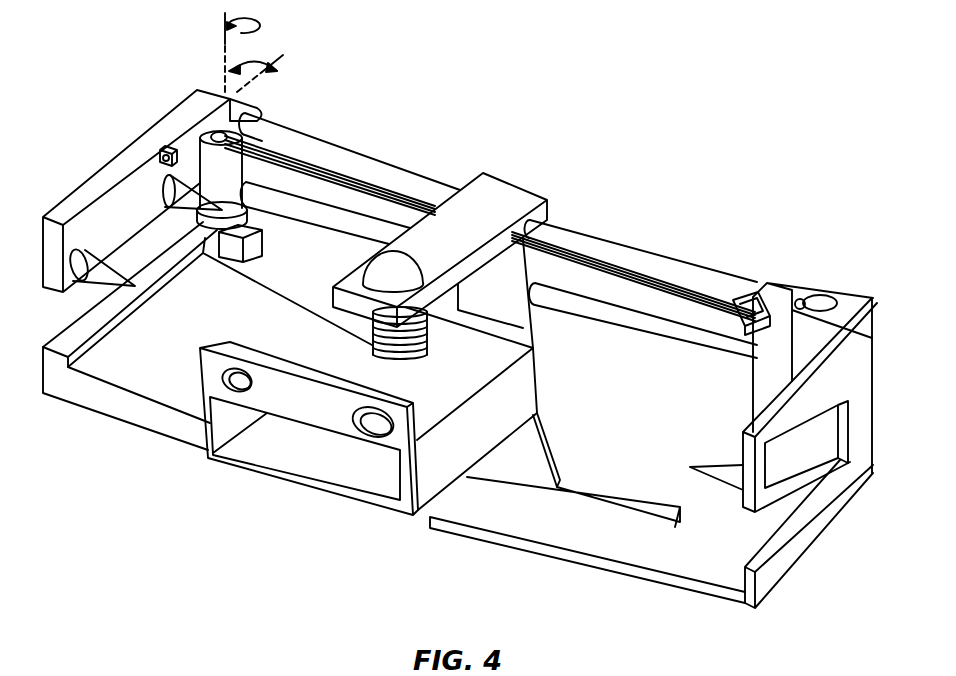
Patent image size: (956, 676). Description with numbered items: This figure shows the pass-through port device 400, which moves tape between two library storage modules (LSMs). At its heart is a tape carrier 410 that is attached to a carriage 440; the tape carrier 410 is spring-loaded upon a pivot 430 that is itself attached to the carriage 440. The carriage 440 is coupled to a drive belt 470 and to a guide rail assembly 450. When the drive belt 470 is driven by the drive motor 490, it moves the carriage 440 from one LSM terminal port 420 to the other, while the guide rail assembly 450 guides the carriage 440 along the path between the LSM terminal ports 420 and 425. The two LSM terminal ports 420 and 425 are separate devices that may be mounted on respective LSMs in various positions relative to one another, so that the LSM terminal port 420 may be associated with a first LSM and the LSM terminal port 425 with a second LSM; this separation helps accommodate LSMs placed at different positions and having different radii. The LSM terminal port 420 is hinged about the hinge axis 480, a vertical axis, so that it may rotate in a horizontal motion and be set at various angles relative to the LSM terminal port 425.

The pass-through port device 400 is at (460, 340).
The tape carrier 410 is at (353, 468).
The LSM terminal port 420 is at (83, 391).
The LSM terminal port 425 is at (703, 593).
The pivot 430 is at (377, 333).
The carriage 440 is at (535, 314).
The guide rail assembly 450 is at (691, 291).
The drive belt 470 is at (396, 191).
The hinge axis 480 is at (275, 70).
The drive motor 490 is at (250, 210).